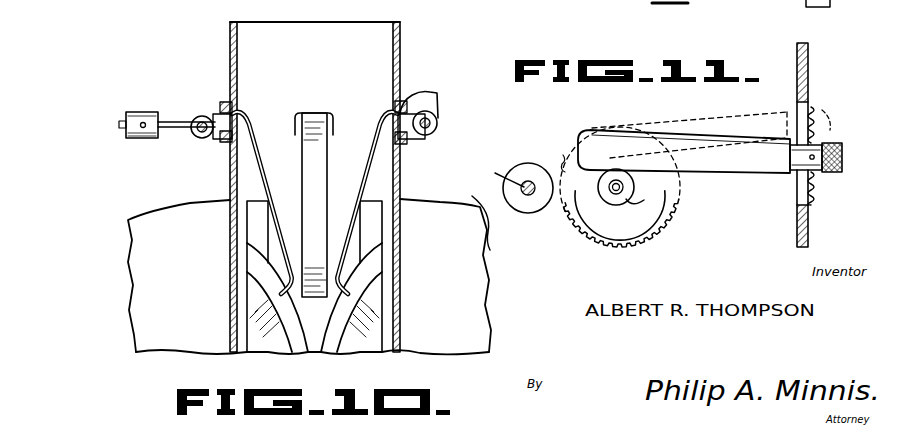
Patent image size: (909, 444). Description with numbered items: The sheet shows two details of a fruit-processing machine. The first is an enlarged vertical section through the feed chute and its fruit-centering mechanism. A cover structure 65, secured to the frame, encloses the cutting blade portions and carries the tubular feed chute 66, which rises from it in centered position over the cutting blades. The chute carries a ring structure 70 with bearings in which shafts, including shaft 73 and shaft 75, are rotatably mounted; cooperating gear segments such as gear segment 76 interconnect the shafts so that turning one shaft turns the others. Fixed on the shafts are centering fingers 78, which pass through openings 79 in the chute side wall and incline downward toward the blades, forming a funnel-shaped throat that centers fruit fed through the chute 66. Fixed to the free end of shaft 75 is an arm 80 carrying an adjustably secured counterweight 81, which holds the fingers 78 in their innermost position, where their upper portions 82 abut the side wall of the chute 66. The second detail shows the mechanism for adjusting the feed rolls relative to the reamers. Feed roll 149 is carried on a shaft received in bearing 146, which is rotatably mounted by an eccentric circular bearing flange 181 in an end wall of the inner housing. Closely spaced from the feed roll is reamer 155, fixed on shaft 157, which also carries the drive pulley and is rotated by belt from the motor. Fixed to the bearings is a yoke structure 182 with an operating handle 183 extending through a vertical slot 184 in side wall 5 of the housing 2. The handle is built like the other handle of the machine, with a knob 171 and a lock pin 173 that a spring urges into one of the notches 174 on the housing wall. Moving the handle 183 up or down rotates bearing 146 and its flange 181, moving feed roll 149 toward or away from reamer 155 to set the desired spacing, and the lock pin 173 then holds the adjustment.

In FIG. 10, the tubular feed chute 66 is at (324, 54).
In FIG. 10, the cover structure 65 is at (455, 271).
In FIG. 10, the centering fingers 78 is at (272, 186).
In FIG. 10, the counterweight 81 is at (146, 112).
In FIG. 10, the arm 80 is at (172, 122).
In FIG. 10, the shaft 75 is at (196, 135).
In FIG. 10, the openings 79 is at (222, 137).
In FIG. 10, the ring structure 70 is at (230, 148).
In FIG. 10, the upper portions 82 is at (236, 108).
In FIG. 10, the shaft 73 is at (440, 124).
In FIG. 10, the gear segment 76 is at (440, 101).
In FIG. 11, the housing 2 is at (810, 72).
In FIG. 11, the side wall 5 is at (810, 228).
In FIG. 11, the notches 174 is at (816, 116).
In FIG. 11, the lock pin 173 is at (832, 128).
In FIG. 11, the vertical slot 184 is at (814, 196).
In FIG. 11, the knob 171 is at (840, 170).
In FIG. 11, the operating handle 183 is at (844, 150).
In FIG. 11, the yoke structure 182 is at (780, 175).
In FIG. 11, the bearing 146 is at (672, 212).
In FIG. 11, the feed roll 149 is at (646, 201).
In FIG. 11, the circular bearing flange 181 is at (562, 157).
In FIG. 11, the reamer 155 is at (538, 213).
In FIG. 11, the shaft 157 is at (497, 176).